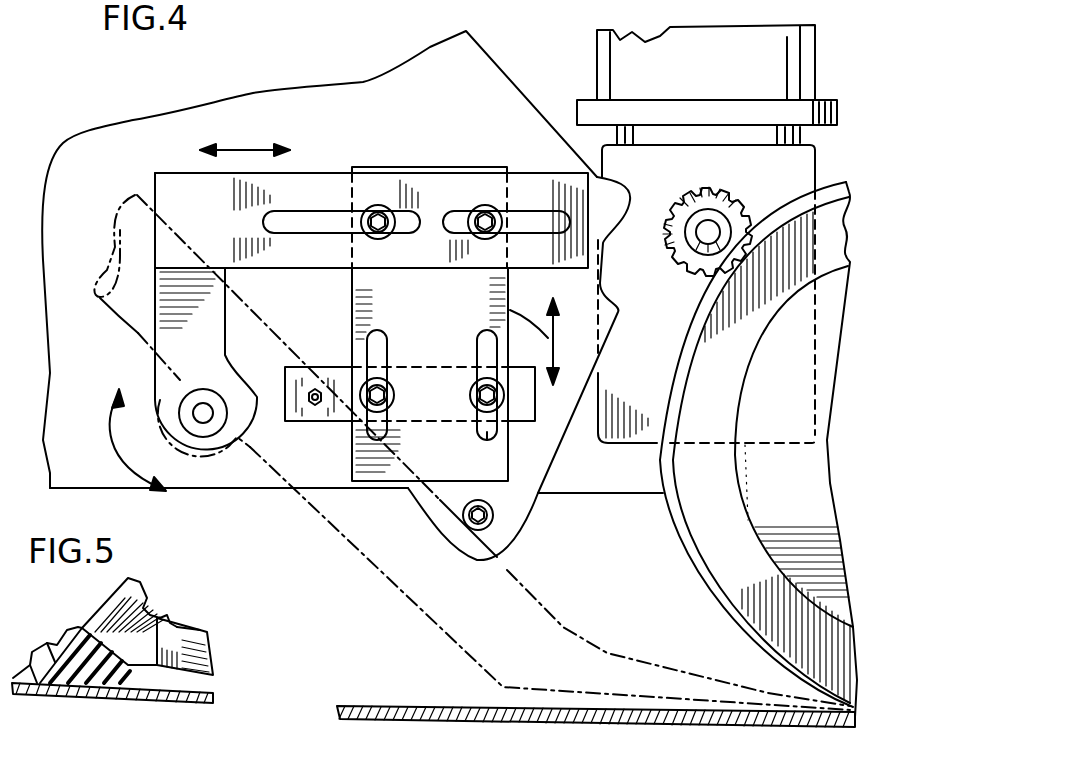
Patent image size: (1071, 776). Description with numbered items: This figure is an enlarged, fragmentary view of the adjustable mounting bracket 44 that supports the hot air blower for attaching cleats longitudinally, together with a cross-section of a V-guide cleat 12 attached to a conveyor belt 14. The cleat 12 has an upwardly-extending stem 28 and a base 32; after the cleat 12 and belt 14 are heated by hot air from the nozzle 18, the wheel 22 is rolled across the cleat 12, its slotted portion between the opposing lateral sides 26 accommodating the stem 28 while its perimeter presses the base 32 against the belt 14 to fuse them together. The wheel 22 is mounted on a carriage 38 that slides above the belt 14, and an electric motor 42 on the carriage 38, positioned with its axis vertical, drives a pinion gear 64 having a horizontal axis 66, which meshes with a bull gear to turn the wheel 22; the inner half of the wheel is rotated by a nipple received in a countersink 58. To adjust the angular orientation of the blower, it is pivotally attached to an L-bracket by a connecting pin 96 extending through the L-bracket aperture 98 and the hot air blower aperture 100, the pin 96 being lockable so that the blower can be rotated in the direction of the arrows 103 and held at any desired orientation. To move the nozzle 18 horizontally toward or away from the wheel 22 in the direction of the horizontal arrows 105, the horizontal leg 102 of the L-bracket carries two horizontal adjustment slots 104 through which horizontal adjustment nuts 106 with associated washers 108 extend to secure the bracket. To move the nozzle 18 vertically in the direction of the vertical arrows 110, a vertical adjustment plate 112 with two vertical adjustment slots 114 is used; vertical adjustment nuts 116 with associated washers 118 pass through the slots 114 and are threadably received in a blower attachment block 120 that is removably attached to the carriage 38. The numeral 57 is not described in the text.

In FIG. 4, the carriage 38 is at (80, 203).
In FIG. 4, the mounting bracket 44 is at (163, 185).
In FIG. 4, the connecting pin 96 is at (205, 425).
In FIG. 4, the L-bracket aperture 98 is at (203, 413).
In FIG. 4, the hot air blower aperture 100 is at (204, 428).
In FIG. 4, the horizontal leg 102 is at (308, 187).
In FIG. 4, the horizontal adjustment slots 104 is at (411, 205).
In FIG. 4, the horizontal arrows 105 is at (233, 173).
In FIG. 4, the horizontal adjustment nuts 106 is at (452, 238).
In FIG. 4, the washers 108 is at (483, 206).
In FIG. 4, the vertical arrows 110 is at (548, 353).
In FIG. 4, the vertical adjustment plate 112 is at (455, 323).
In FIG. 4, the vertical adjustment slots 114 is at (477, 435).
In FIG. 4, the vertical adjustment nuts 116 is at (470, 393).
In FIG. 4, the washers 118 is at (485, 385).
In FIG. 4, the blower attachment block 120 is at (307, 367).
In FIG. 4, the arrows 103 is at (115, 407).
In FIG. 4, the nozzle 18 is at (527, 608).
In FIG. 4, the conveyor belt 14 is at (427, 682).
In FIG. 5, the conveyor belt 14 is at (209, 677).
In FIG. 4, the electric motor 42 is at (803, 53).
In FIG. 4, the horizontal axis 66 is at (708, 135).
In FIG. 4, the drive housing 57 is at (698, 272).
In FIG. 4, the countersink 58 is at (706, 316).
In FIG. 4, the pinion gear 64 is at (721, 157).
In FIG. 4, the wheel 22 is at (720, 583).
In FIG. 4, the lateral sides 26 is at (785, 516).
In FIG. 5, the cleat 12 is at (92, 615).
In FIG. 5, the stem 28 is at (148, 617).
In FIG. 5, the base 32 is at (187, 627).